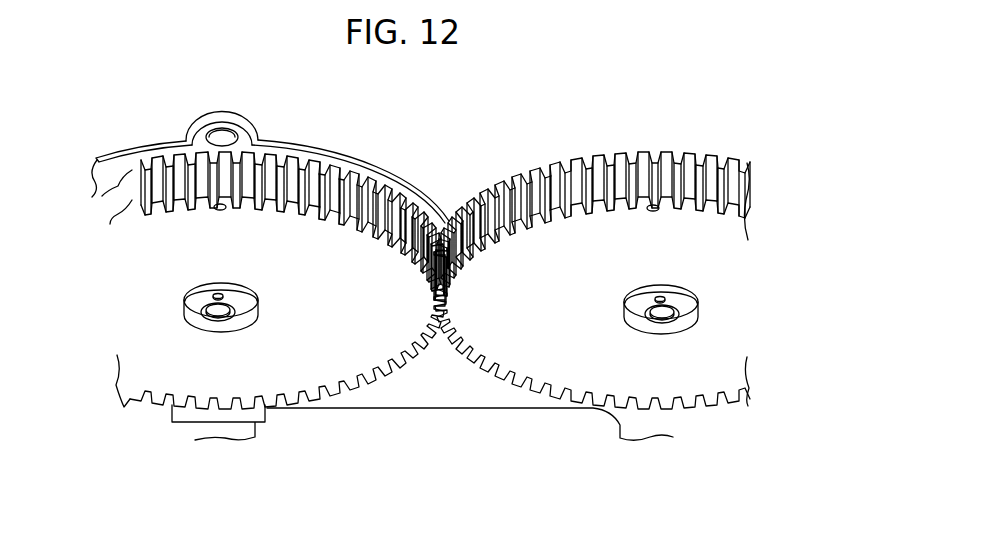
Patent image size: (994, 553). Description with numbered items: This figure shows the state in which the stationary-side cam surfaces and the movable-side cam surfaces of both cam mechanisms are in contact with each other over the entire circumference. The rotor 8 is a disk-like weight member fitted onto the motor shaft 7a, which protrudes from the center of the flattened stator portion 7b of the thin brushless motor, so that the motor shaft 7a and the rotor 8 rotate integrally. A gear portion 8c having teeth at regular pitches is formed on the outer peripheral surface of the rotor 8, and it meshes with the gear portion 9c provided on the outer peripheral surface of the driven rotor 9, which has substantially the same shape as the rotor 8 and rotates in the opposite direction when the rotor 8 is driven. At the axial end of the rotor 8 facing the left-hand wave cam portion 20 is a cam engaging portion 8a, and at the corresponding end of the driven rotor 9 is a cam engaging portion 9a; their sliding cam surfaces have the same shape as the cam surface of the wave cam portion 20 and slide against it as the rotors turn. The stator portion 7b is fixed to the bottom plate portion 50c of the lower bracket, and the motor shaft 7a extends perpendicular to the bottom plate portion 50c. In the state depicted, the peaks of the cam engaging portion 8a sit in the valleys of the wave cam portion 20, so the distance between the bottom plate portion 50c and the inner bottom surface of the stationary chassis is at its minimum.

The motor shaft 7a is at (220, 312).
The stator portion 7b is at (252, 135).
The rotor 8 is at (268, 284).
The cam engaging portion 8a is at (183, 361).
The gear portion 8c is at (407, 367).
The driven rotor 9 is at (587, 287).
The cam engaging portion 9a is at (650, 284).
The gear portion 9c is at (453, 347).
The wave cam portion 20 is at (370, 288).
The bottom plate portion 50c is at (502, 402).